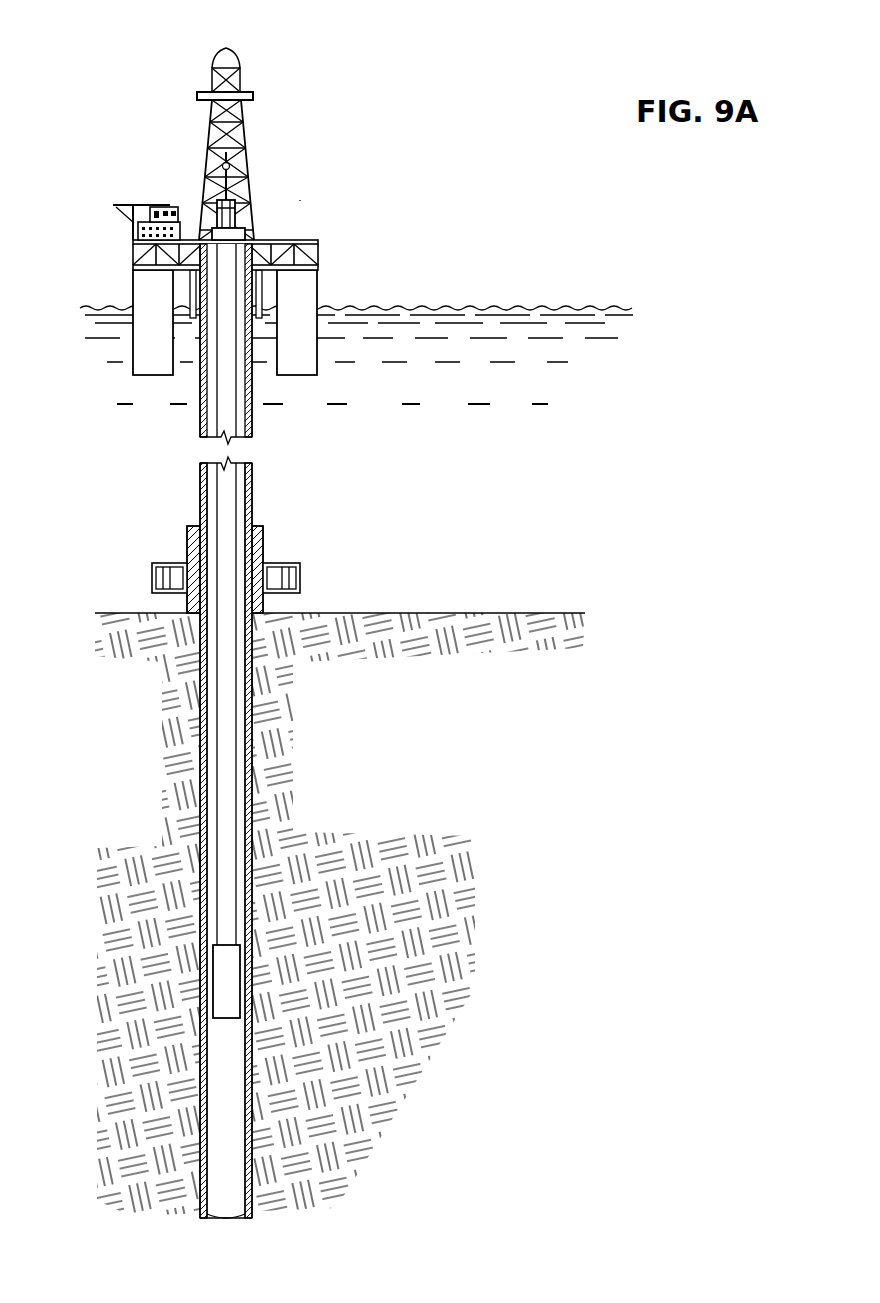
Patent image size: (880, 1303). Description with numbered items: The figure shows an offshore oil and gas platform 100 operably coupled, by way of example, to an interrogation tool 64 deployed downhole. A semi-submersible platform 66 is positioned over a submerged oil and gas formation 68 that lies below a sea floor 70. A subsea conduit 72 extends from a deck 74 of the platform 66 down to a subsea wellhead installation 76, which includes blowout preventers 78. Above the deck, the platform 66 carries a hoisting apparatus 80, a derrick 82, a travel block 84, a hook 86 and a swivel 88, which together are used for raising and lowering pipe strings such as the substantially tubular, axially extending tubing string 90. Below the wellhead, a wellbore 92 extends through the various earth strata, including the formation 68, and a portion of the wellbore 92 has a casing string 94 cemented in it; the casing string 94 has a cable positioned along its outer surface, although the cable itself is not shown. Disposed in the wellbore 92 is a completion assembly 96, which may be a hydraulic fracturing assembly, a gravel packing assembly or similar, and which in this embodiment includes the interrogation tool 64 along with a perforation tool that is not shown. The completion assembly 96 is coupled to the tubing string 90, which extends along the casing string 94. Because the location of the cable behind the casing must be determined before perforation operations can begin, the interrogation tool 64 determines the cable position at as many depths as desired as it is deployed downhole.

The offshore oil and gas platform 100 is at (366, 112).
The derrick 82 is at (216, 78).
The travel block 84 is at (209, 156).
The hook 86 is at (243, 186).
The swivel 88 is at (246, 212).
The hoisting apparatus 80 is at (247, 236).
The semi-submersible platform 66 is at (312, 241).
The deck 74 is at (190, 240).
The subsea conduit 72 is at (200, 421).
The subsea wellhead installation 76 is at (163, 532).
The blowout preventers 78 is at (283, 575).
The sea floor 70 is at (488, 612).
The wellbore 92 is at (234, 720).
The tubing string 90 is at (218, 760).
The casing string 94 is at (200, 782).
The oil and gas formation 68 is at (403, 945).
The interrogation tool 64 is at (220, 1000).
The completion assembly 96 is at (262, 1004).